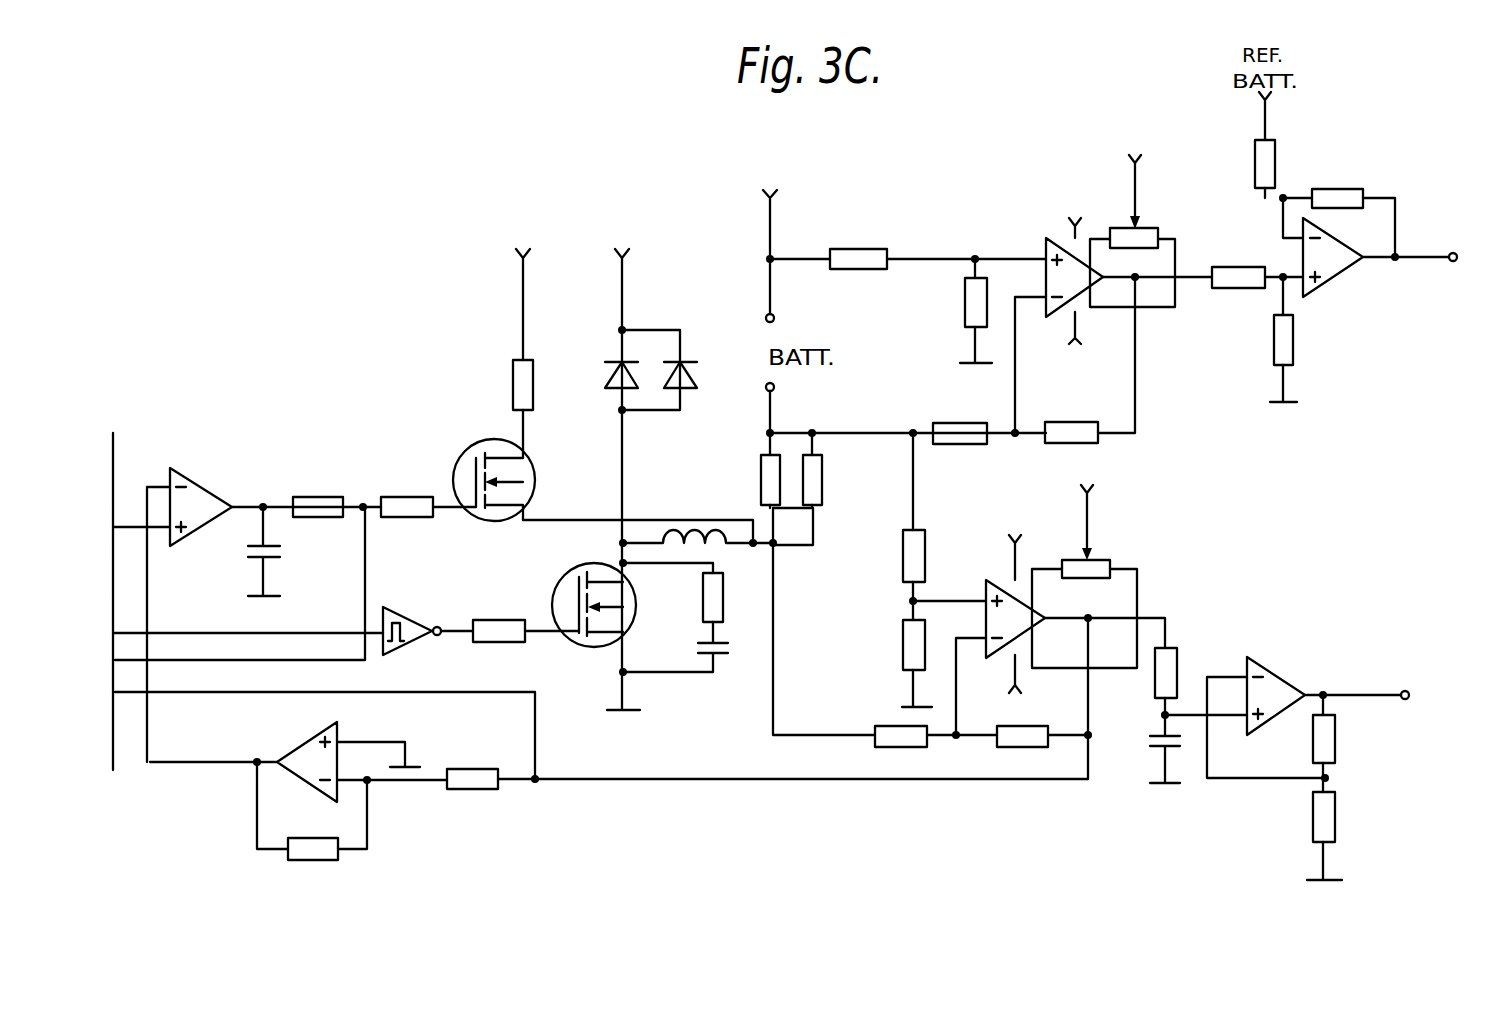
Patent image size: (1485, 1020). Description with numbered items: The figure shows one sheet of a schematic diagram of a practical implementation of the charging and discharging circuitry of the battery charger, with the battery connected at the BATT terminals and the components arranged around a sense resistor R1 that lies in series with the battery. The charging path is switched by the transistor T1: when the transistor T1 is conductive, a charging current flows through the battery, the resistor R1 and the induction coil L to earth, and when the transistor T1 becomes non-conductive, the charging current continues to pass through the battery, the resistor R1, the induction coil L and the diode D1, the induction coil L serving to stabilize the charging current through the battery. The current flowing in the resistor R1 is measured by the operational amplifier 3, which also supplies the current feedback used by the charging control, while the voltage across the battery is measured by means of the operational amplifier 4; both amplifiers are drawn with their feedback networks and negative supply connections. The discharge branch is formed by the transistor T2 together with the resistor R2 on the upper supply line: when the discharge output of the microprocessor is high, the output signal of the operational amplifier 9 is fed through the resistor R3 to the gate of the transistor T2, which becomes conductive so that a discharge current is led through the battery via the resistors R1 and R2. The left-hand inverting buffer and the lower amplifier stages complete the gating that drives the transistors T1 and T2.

The operational amplifier 9 is at (199, 515).
The operational amplifier 4 is at (1071, 286).
The operational amplifier 3 is at (1013, 629).
The resistor R2 is at (516, 386).
The resistor R3 is at (316, 497).
The resistor R1 is at (804, 538).
The transistor T1 is at (577, 583).
The transistor T2 is at (522, 468).
The diode D1 is at (667, 359).
The induction coil L is at (690, 528).